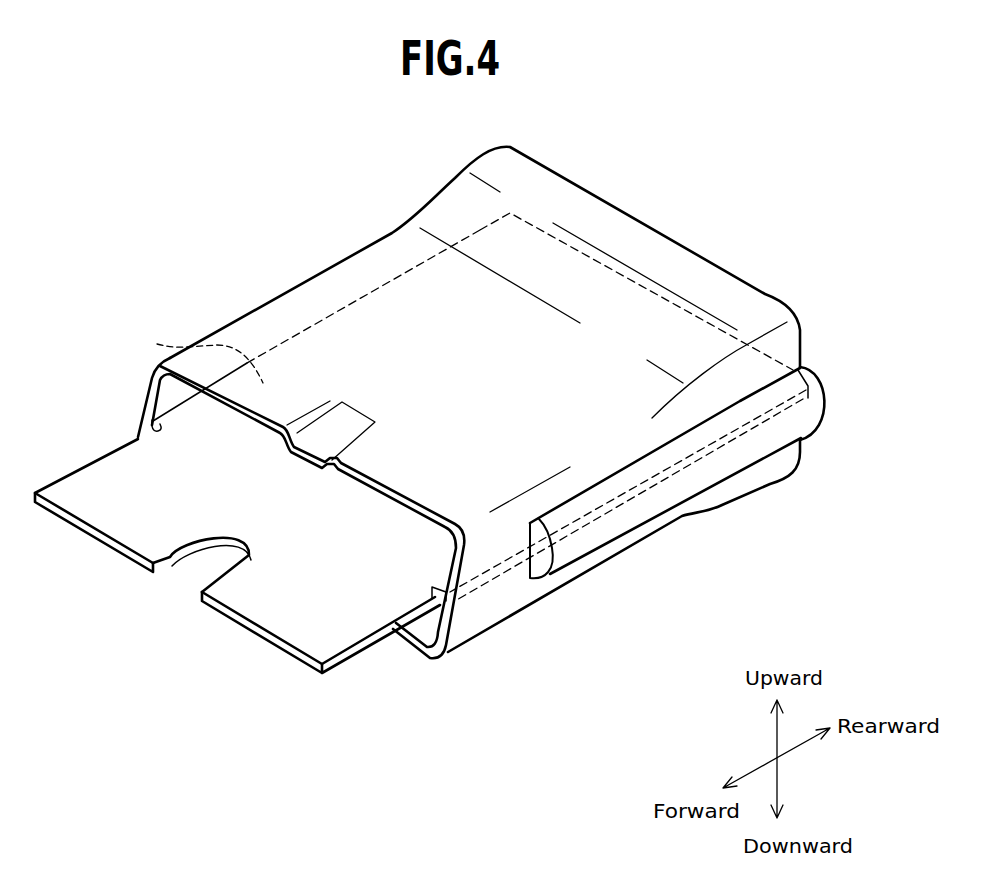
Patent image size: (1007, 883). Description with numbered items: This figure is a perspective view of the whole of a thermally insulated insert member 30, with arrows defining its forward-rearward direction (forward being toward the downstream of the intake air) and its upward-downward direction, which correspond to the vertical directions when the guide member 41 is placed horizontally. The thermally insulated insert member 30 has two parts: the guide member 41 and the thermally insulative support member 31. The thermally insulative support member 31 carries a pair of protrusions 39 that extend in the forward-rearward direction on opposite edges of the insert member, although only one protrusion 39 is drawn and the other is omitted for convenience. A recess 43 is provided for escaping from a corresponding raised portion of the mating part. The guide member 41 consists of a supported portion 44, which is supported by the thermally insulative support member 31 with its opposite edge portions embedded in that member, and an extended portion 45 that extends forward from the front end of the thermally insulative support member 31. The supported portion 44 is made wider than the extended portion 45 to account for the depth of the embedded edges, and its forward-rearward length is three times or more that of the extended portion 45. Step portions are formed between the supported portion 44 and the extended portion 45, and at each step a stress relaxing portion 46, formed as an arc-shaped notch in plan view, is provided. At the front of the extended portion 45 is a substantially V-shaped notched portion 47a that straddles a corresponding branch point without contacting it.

The thermally insulated insert member 30 is at (197, 236).
The thermally insulative support member 31 is at (240, 322).
The protrusion 39 is at (609, 522).
The guide member 41 is at (168, 288).
The recess 43 is at (334, 427).
The supported portion 44 is at (162, 344).
The extended portion 45 is at (88, 482).
The stress relaxing portion 46 is at (440, 588).
The notched portion 47a is at (172, 563).